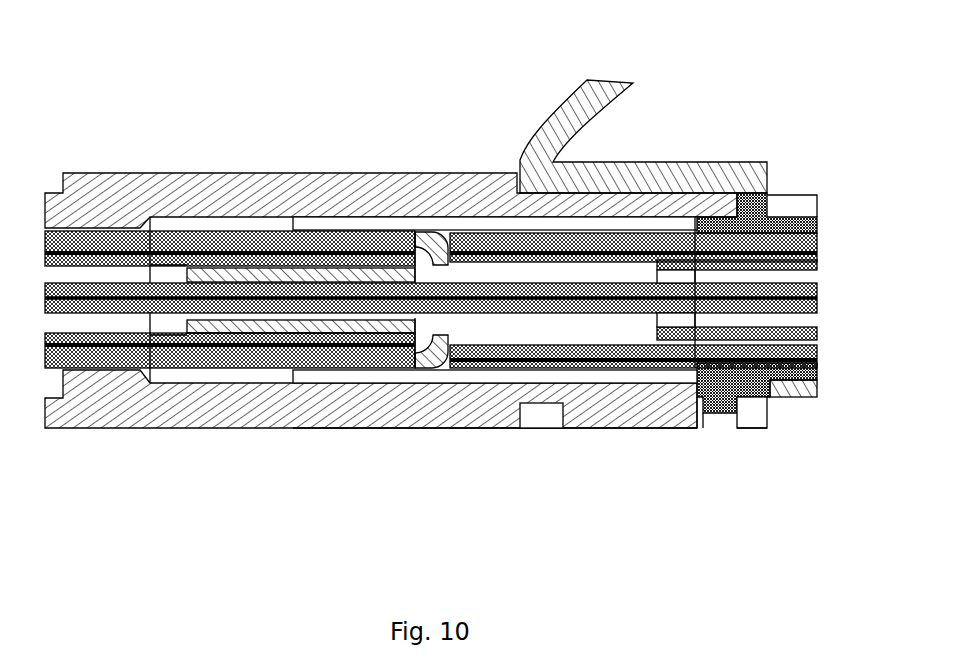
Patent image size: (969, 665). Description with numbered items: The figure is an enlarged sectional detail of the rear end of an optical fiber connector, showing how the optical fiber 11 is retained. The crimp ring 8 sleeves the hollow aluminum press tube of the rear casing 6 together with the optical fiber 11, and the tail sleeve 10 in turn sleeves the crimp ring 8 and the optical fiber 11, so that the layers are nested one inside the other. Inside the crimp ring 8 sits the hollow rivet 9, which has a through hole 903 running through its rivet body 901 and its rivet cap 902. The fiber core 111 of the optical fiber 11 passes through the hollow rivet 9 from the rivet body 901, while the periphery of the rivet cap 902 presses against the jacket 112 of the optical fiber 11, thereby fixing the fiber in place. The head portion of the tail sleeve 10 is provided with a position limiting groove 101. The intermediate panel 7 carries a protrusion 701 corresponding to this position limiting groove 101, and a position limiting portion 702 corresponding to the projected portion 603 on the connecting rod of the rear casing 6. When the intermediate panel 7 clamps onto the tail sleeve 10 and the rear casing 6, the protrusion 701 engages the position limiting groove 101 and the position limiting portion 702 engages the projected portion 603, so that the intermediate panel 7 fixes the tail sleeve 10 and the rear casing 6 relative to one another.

The tail sleeve 10 is at (75, 180).
The optical fiber 11 is at (67, 360).
The fiber core 111 is at (200, 255).
The jacket 112 is at (412, 318).
The crimp ring 8 is at (326, 218).
The hollow rivet 9 is at (393, 337).
The rivet body 901 is at (250, 335).
The rivet cap 902 is at (443, 368).
The through hole 903 is at (377, 280).
The intermediate panel 7 is at (557, 160).
The rear casing 6 is at (765, 170).
The projected portion 603 is at (712, 430).
The position limiting groove 101 is at (520, 423).
The protrusion 701 is at (552, 428).
The position limiting portion 702 is at (752, 428).